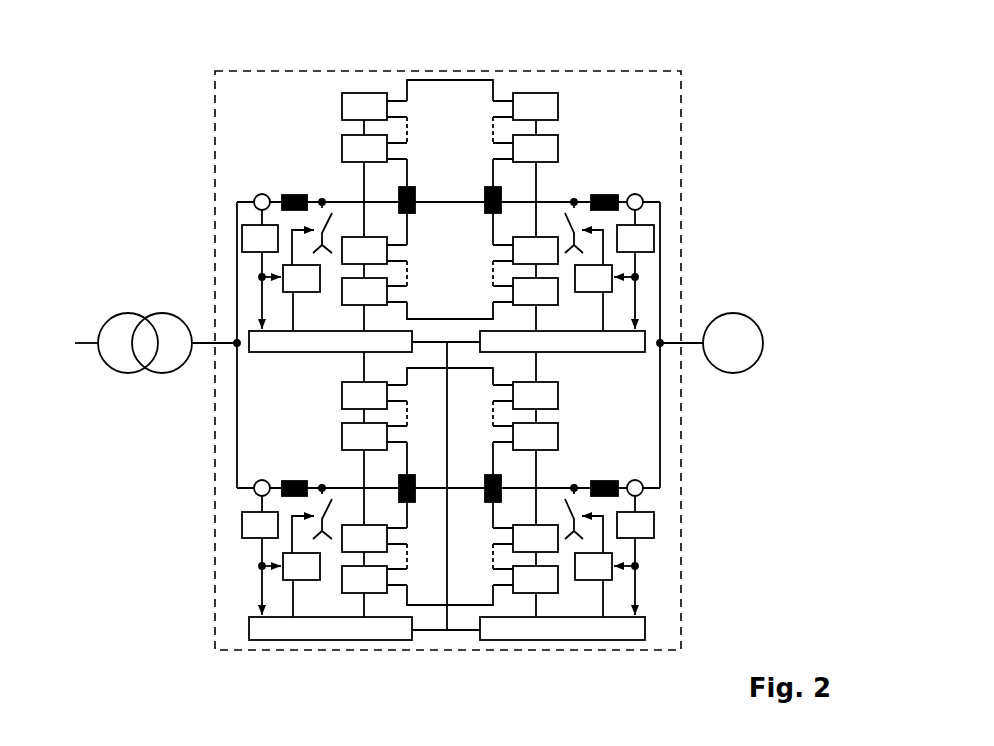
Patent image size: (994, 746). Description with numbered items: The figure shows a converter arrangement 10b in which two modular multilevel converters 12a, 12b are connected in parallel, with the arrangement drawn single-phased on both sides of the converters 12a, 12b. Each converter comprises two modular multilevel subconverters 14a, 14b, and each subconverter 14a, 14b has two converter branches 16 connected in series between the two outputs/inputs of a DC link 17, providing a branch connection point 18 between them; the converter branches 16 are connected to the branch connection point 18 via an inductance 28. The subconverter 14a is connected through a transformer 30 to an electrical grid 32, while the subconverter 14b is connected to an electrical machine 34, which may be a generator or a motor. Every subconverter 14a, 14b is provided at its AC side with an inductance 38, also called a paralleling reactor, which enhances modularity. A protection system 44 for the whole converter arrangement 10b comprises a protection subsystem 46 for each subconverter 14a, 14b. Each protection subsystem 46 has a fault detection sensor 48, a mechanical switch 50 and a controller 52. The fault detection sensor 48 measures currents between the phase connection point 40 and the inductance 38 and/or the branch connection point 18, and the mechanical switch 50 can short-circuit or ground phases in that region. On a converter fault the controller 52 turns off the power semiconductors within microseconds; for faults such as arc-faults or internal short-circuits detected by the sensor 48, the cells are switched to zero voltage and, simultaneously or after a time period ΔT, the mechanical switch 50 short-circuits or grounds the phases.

The converter arrangement 10b is at (625, 70).
The modular multilevel converter 12a is at (180, 178).
The modular multilevel converter 12b is at (177, 605).
The modular multilevel subconverter 14a is at (262, 88).
The modular multilevel subconverter 14b is at (517, 70).
The converter branch 16 is at (353, 70).
The DC link 17 is at (435, 95).
The branch connection point 18 is at (484, 197).
The inductance 28 is at (481, 217).
The transformer 30 is at (157, 315).
The electrical grid 32 is at (85, 347).
The electrical machine 34 is at (737, 328).
The inductance 38 is at (297, 193).
The phase connection point 40 is at (237, 345).
The protection system 44 is at (712, 105).
The protection subsystem 46 is at (247, 177).
The fault detection sensor 48 is at (242, 237).
The mechanical switch 50 is at (312, 242).
The controller 52 is at (333, 352).